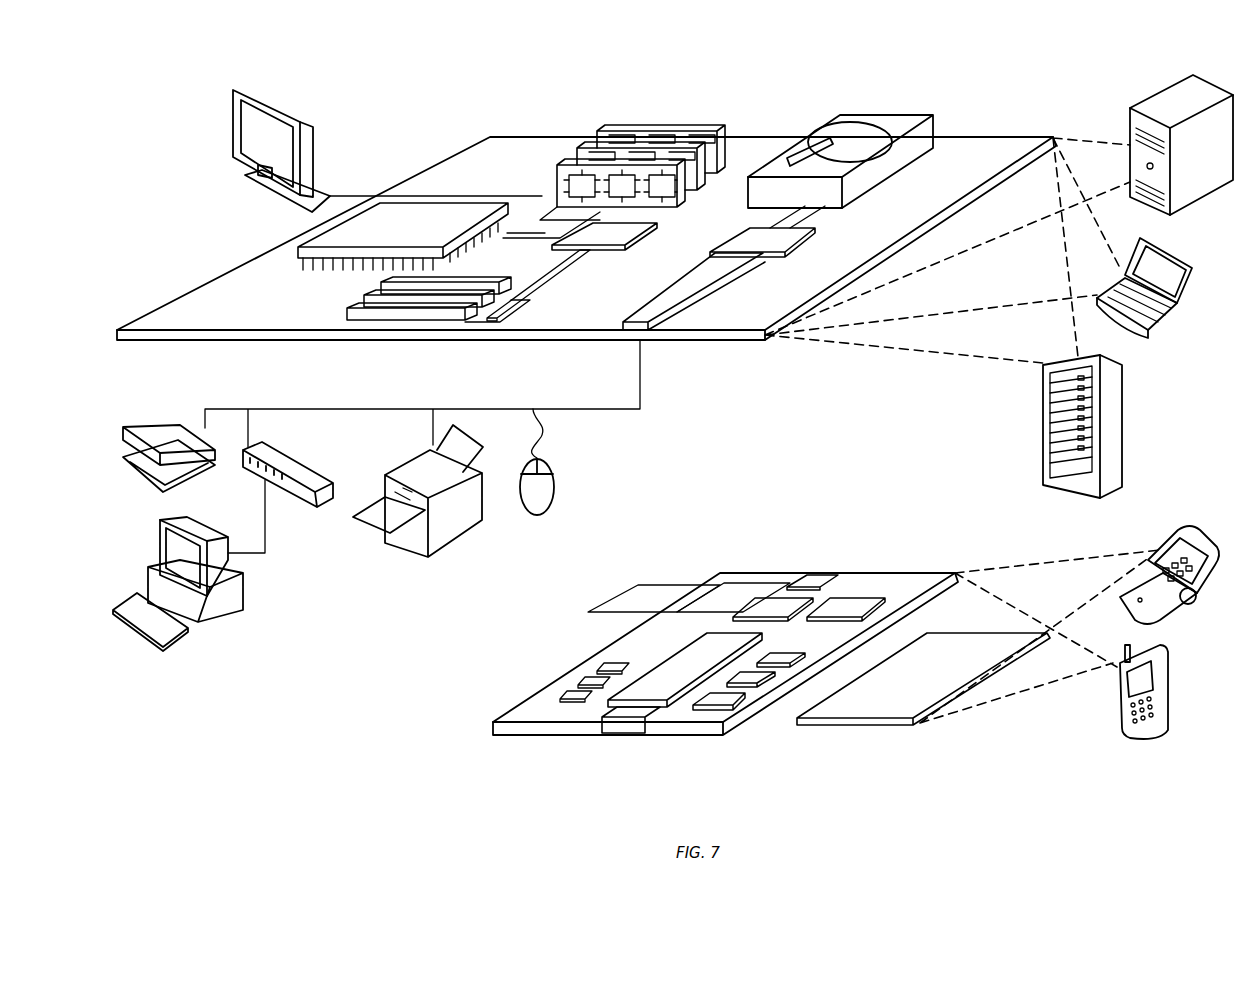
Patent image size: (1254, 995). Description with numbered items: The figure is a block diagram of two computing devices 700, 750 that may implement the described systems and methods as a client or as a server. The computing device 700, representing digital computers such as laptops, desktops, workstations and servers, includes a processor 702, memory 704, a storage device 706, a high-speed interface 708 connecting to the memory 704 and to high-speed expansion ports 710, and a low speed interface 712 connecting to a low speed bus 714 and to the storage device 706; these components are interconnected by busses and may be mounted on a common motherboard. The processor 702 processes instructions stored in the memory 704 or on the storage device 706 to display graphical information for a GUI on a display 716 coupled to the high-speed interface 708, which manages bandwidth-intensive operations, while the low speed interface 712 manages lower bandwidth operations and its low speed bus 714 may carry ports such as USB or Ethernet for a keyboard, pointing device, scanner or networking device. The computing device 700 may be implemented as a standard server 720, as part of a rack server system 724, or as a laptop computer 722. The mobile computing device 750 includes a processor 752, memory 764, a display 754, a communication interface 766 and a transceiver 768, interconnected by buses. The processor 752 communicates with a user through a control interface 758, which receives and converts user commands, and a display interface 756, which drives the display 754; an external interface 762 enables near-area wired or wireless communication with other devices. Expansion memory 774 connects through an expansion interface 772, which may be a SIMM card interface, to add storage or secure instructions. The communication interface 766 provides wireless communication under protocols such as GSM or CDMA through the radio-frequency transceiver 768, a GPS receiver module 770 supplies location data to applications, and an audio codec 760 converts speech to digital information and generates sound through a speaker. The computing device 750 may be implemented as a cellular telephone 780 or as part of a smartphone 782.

The computing device 700 is at (422, 102).
The processor 702 is at (298, 250).
The memory 704 is at (605, 128).
The storage device 706 is at (830, 117).
The high-speed interface 708 is at (581, 233).
The high-speed expansion ports 710 is at (363, 308).
The low speed interface 712 is at (745, 237).
The low speed bus 714 is at (648, 331).
The display 716 is at (233, 88).
The standard server 720 is at (1130, 122).
The laptop computer 722 is at (1192, 263).
The rack server system 724 is at (1043, 447).
The computing device 750 is at (466, 738).
The processor 752 is at (660, 693).
The display 754 is at (883, 708).
The display interface 756 is at (727, 702).
The control interface 758 is at (752, 678).
The audio codec 760 is at (782, 658).
The external interface 762 is at (627, 723).
The memory 764 is at (578, 683).
The communication interface 766 is at (773, 606).
The transceiver 768 is at (846, 606).
The GPS receiver module 770 is at (821, 581).
The expansion interface 772 is at (707, 583).
The expansion memory 774 is at (638, 583).
The cellular telephone 780 is at (1177, 527).
The smartphone 782 is at (1120, 695).